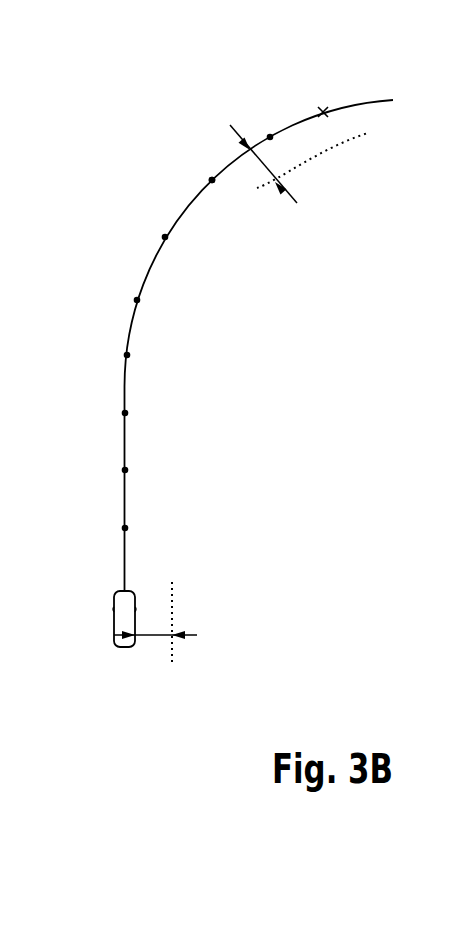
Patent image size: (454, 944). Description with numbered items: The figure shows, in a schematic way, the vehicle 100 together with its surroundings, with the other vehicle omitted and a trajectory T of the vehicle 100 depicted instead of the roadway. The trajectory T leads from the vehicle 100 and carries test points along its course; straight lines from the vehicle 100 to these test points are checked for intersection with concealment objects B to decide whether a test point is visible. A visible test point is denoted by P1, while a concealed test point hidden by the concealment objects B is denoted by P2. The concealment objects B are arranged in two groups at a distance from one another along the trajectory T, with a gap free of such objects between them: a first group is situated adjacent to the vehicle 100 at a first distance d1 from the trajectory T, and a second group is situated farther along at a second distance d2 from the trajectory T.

The trajectory T is at (148, 262).
The vehicle 100 is at (123, 647).
The concealment objects B is at (358, 143).
The visible test point P1 is at (212, 180).
The concealed test point P2 is at (323, 112).
The first distance d1 is at (155, 620).
The second distance d2 is at (274, 165).